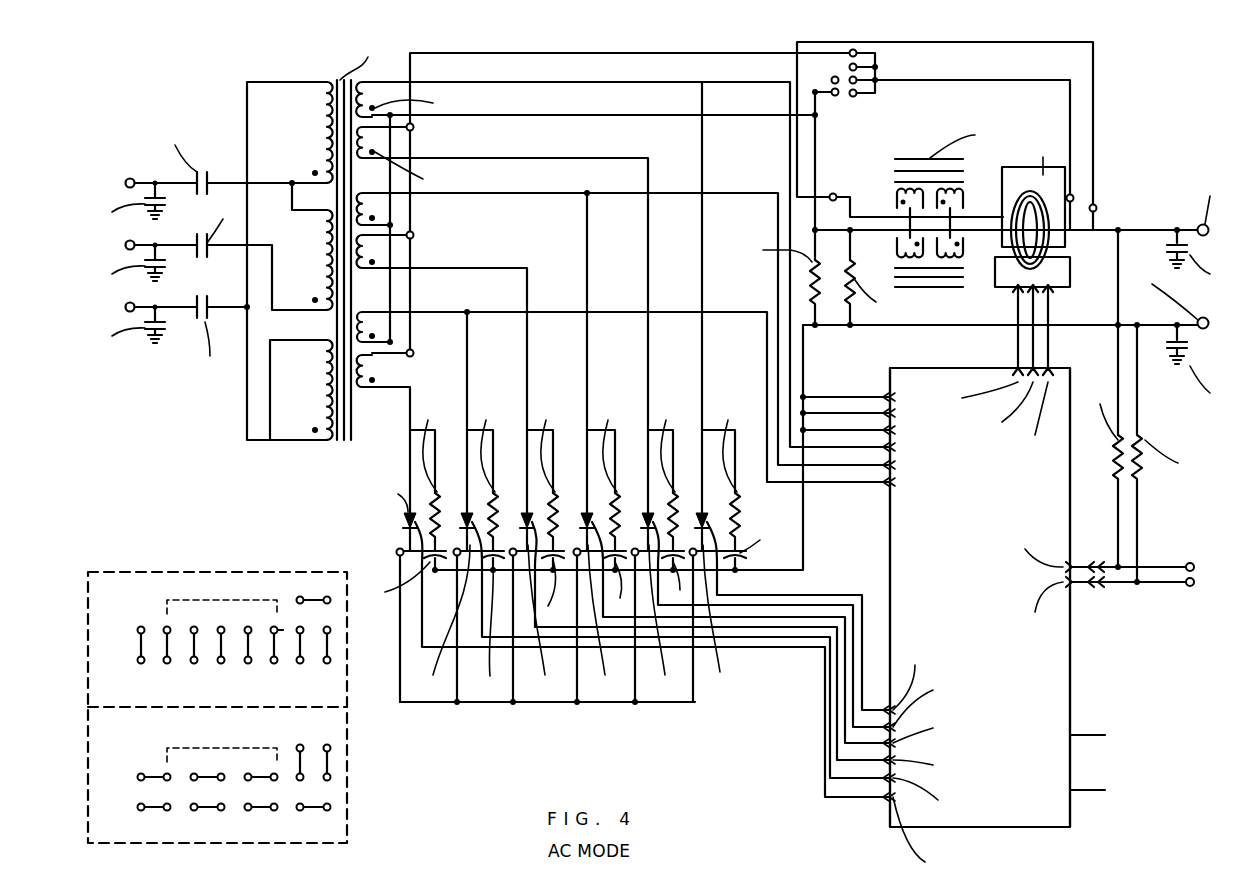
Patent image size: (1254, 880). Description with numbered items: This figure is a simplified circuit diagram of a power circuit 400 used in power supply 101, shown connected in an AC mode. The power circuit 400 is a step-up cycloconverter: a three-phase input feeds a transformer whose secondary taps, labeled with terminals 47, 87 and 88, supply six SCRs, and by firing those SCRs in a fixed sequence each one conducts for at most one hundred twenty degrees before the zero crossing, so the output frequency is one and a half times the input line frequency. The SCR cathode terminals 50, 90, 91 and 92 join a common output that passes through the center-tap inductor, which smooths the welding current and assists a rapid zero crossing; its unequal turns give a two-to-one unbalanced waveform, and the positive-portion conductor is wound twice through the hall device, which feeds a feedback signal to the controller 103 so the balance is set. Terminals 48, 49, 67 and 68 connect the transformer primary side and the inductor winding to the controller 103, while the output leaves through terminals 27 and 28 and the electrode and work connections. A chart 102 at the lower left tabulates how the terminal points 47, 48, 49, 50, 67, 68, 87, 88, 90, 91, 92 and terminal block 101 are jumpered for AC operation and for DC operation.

The output terminal 27 is at (1190, 587).
The output terminal 28 is at (1190, 562).
The transformer secondary tap terminal 47 is at (414, 352).
The terminals 48 is at (831, 80).
The terminal 49 is at (1097, 208).
The SCR cathode terminals 50 is at (455, 556).
The terminal 67 is at (836, 194).
The terminal 68 is at (1073, 196).
The transformer secondary tap terminal 87 is at (414, 234).
The transformer secondary tap terminal 88 is at (414, 129).
The SCR cathode terminal 90 is at (398, 549).
The SCR cathode terminal 91 is at (513, 548).
The SCR cathode terminal 92 is at (635, 548).
The power supply 101 is at (878, 80).
The terminal connection chart 102 is at (348, 640).
The control circuit 103 is at (957, 514).
The power circuit 400 is at (760, 742).